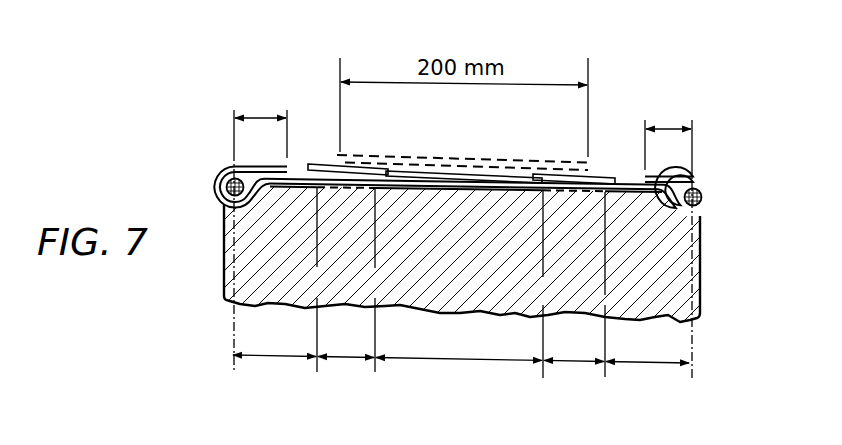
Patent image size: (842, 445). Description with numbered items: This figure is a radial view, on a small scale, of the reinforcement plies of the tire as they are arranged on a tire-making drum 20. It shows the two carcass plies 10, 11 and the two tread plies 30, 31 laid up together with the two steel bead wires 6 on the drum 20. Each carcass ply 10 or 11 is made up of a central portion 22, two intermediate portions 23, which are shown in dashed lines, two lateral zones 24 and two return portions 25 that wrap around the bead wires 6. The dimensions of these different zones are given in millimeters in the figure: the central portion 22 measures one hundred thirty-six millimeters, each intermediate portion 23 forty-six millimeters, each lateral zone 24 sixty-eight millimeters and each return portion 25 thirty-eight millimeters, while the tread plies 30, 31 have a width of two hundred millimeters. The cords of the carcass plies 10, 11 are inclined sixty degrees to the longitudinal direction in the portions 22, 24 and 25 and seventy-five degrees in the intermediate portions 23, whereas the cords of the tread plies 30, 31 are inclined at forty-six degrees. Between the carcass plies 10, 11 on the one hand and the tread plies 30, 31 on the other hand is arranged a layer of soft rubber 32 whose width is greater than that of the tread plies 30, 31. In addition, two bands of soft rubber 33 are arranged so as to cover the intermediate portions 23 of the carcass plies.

The steel bead wire 6 is at (222, 203).
The carcass ply 10 is at (716, 198).
The carcass ply 11 is at (215, 186).
The tire-making drum 20 is at (703, 278).
The central portion 22 is at (510, 367).
The intermediate portion 23 is at (352, 360).
The lateral zone 24 is at (279, 357).
The return portion 25 is at (258, 120).
The tread ply 30 is at (517, 164).
The tread ply 31 is at (469, 163).
The layer of soft rubber 32 is at (433, 171).
The band of soft rubber 33 is at (322, 164).